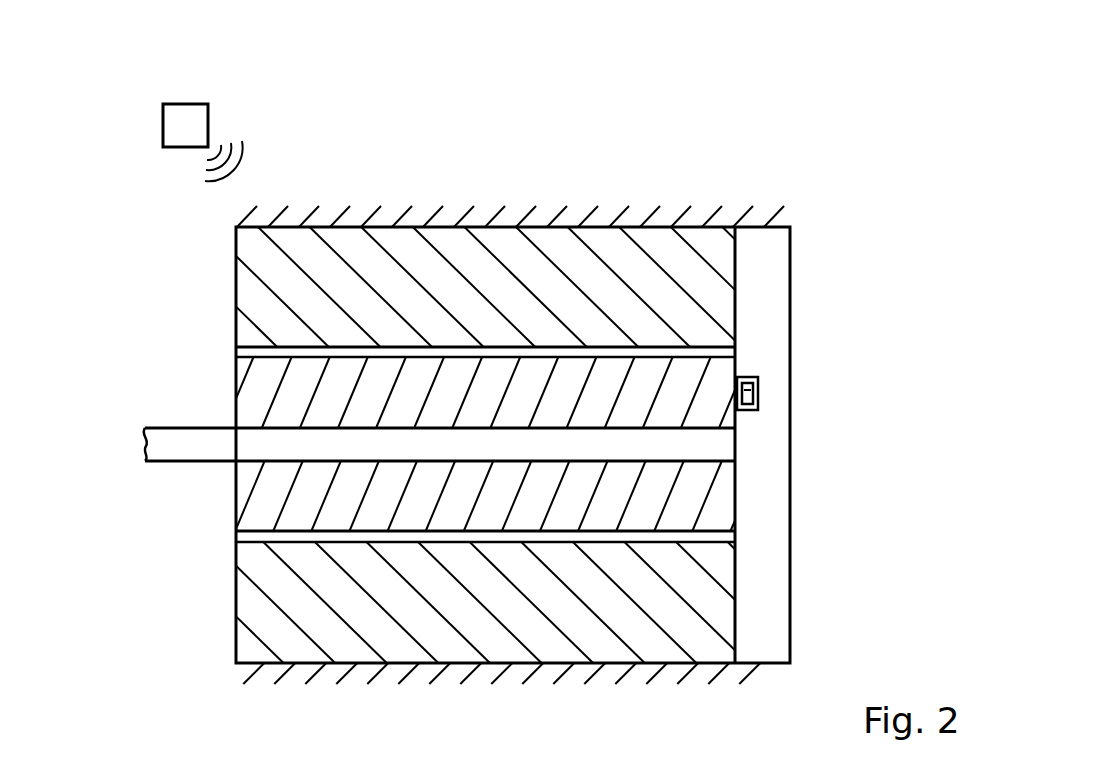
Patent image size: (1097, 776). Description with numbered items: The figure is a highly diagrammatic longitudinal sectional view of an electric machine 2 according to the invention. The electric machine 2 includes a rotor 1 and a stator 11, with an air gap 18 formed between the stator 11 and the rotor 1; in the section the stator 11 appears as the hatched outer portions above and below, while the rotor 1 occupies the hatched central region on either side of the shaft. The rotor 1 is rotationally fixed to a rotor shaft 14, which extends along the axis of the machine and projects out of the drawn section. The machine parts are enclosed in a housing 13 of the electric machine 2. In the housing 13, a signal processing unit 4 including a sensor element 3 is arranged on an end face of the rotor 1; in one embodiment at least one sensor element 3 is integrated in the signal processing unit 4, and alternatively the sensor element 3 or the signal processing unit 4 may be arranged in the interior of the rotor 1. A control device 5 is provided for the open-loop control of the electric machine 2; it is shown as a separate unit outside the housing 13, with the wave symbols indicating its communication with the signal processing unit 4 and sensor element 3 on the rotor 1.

The rotor 1 is at (273, 401).
The electric machine 2 is at (704, 132).
The sensor element 3 is at (758, 388).
The signal processing unit 4 is at (755, 410).
The control device 5 is at (183, 120).
The stator 11 is at (463, 253).
The housing 13 is at (593, 217).
The rotor shaft 14 is at (182, 444).
The air gap 18 is at (720, 537).